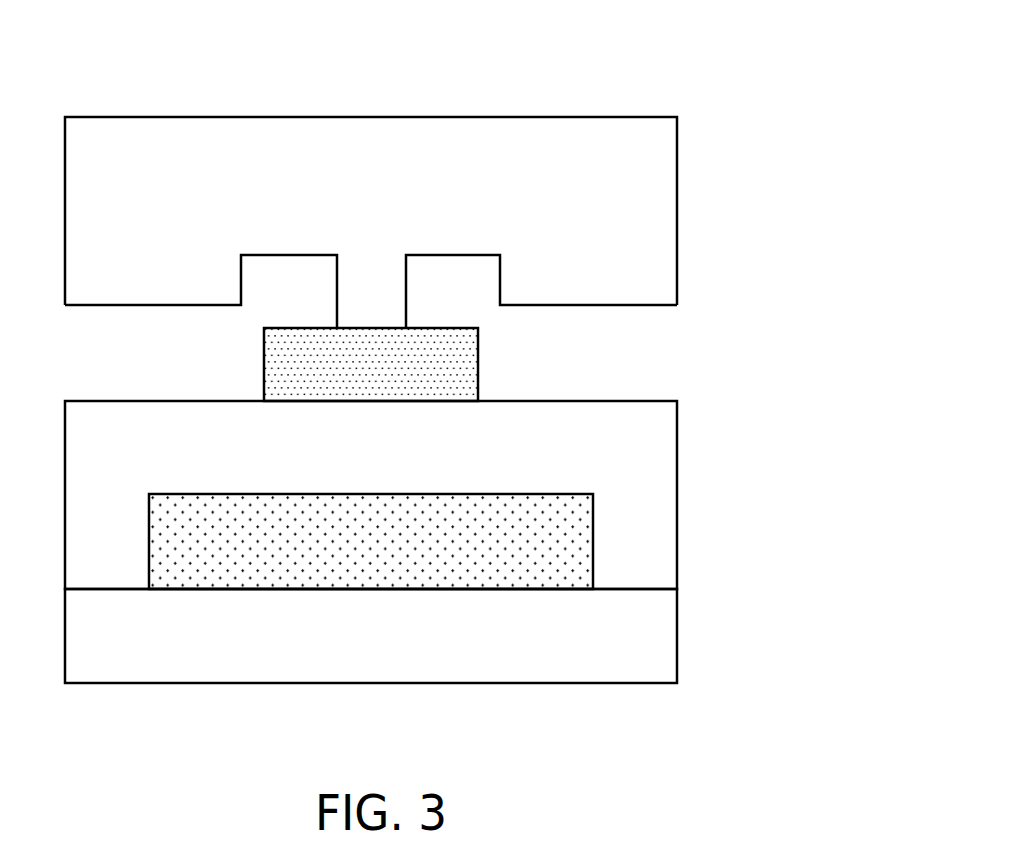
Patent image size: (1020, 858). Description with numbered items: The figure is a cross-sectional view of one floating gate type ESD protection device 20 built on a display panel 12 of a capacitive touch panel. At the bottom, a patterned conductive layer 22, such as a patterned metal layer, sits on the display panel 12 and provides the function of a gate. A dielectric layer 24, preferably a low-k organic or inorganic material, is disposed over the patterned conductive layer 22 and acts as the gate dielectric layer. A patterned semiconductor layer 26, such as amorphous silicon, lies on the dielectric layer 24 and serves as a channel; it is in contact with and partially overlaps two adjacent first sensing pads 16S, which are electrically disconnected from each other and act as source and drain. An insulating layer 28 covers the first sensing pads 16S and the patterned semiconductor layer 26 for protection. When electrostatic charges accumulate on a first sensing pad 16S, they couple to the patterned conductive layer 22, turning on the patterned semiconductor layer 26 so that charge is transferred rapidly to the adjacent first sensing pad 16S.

The floating gate type ESD protection device 20 is at (424, 346).
The display panel 12 is at (638, 648).
The patterned conductive layer 22 is at (388, 558).
The dielectric layer 24 is at (638, 464).
The patterned semiconductor layer 26 is at (387, 377).
The first sensing pads 16S is at (183, 368).
The insulating layer 28 is at (639, 211).